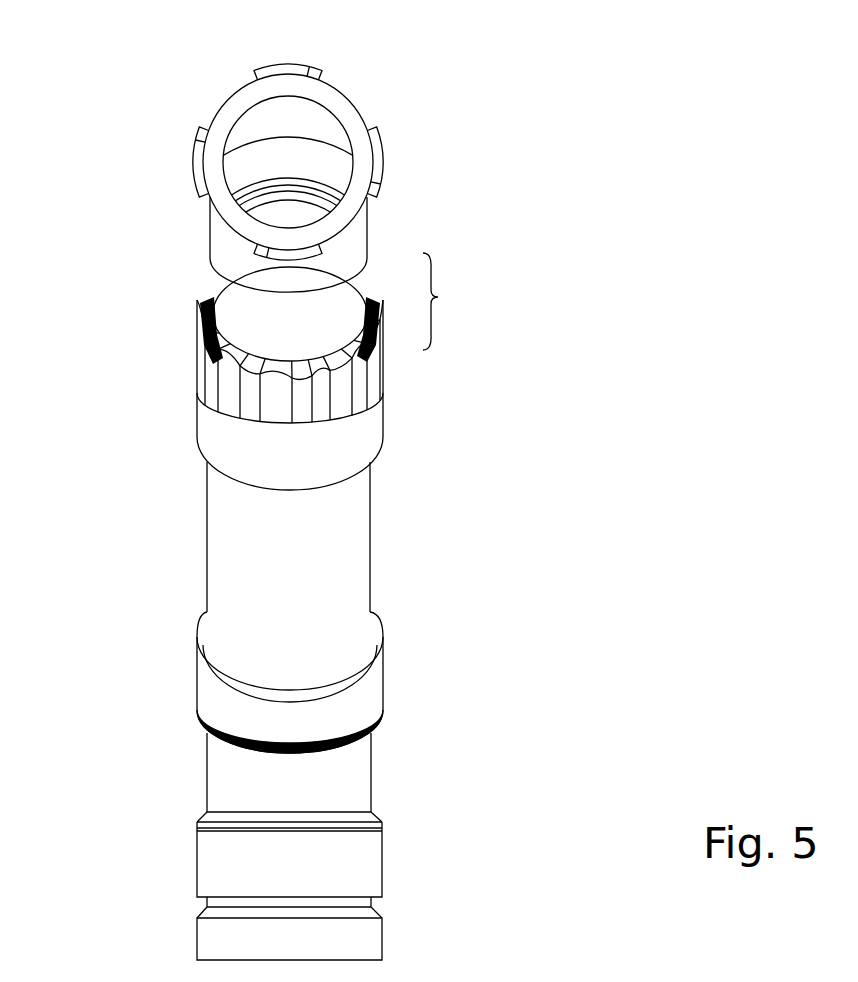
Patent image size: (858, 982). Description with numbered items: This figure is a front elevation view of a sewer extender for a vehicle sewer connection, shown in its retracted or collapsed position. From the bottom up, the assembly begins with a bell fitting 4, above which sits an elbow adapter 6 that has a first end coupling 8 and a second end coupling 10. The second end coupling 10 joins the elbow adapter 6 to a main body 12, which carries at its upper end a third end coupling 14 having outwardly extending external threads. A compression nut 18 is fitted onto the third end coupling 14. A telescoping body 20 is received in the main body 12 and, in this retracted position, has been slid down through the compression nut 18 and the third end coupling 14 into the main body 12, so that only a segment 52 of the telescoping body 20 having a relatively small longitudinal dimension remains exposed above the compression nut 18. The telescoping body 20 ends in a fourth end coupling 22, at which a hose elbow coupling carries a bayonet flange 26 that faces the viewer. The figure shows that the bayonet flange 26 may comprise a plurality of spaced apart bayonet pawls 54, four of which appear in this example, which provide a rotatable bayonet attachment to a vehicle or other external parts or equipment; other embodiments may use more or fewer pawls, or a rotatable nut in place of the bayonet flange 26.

The bell fitting 4 is at (215, 938).
The elbow adapter 6 is at (298, 795).
The first end coupling 8 is at (298, 877).
The second end coupling 10 is at (213, 692).
The main body 12 is at (303, 578).
The third end coupling 14 is at (213, 432).
The compression nut 18 is at (202, 342).
The telescoping body 20 is at (302, 335).
The fourth end coupling 22 is at (350, 243).
The bayonet flange 26 is at (342, 108).
The segment 52 is at (451, 301).
The bayonet pawls 54 is at (205, 128).